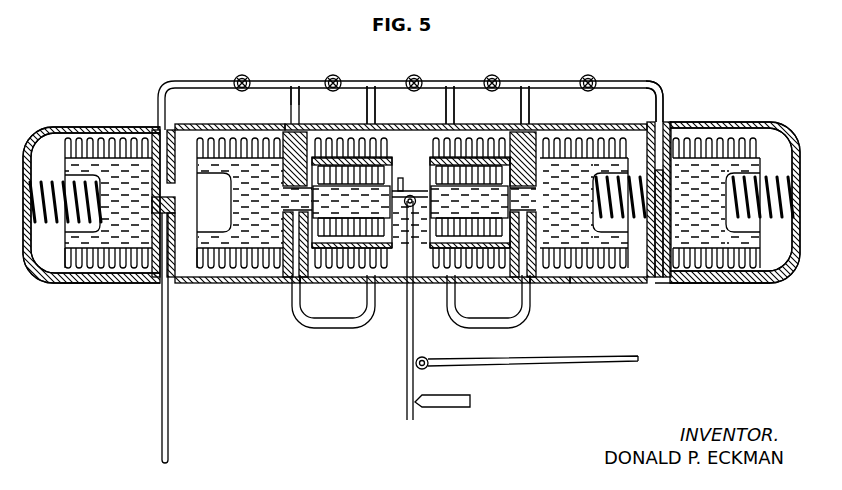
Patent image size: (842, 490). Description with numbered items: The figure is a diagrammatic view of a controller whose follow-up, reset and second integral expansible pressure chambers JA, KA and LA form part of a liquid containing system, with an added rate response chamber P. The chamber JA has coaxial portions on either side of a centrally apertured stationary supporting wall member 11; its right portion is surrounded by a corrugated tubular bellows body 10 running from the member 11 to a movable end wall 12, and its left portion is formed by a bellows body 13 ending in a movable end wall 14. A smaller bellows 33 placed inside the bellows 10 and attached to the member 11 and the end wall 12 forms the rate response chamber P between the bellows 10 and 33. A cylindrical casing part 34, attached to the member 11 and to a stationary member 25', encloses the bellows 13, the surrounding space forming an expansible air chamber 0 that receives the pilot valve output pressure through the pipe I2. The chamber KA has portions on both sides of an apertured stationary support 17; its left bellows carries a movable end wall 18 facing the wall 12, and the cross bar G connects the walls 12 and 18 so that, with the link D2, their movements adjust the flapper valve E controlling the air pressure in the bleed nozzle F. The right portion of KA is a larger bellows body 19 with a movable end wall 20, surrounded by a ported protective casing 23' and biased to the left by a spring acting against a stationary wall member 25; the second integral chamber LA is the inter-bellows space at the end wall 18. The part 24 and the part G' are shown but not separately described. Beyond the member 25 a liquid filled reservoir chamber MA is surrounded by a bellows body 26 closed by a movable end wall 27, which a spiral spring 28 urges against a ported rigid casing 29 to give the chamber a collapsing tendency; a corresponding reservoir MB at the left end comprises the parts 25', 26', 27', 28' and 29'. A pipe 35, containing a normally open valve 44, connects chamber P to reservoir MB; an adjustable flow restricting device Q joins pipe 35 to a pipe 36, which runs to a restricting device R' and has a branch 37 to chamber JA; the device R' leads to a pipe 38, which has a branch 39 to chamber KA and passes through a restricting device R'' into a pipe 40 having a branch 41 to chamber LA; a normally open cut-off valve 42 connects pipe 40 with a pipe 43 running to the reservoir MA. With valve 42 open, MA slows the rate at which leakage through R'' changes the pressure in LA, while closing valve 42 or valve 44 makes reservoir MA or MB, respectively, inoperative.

The normally open valve 44 is at (248, 79).
The adjustable flow restricting device Q is at (336, 78).
The flow restricting device R' is at (423, 74).
The flow restricting device R'' is at (505, 74).
The normally open cut-off valve 42 is at (591, 78).
The pipe 35 is at (291, 87).
The pipe 36 is at (368, 87).
The branch 37 is at (374, 108).
The pipe 38 is at (447, 87).
The branch 39 is at (447, 101).
The pipe 40 is at (531, 87).
The branch 41 is at (530, 108).
The pipe 43 is at (633, 87).
The cylindrical casing part 34 is at (183, 128).
The air chamber 0 is at (183, 267).
The stationary support 17 is at (536, 282).
The expansible reservoir MB is at (110, 140).
The bellows body 26' is at (108, 131).
The spiral spring 28' is at (65, 189).
The movable end wall 27' is at (103, 203).
The rigid casing element 29' is at (66, 300).
The stationary wall member 25' is at (146, 223).
The pipe I2 is at (168, 392).
The corrugated tubular bellows body 13 is at (230, 148).
The movable end wall 14 is at (232, 201).
The stationary supporting wall member 11 is at (282, 282).
The bellows 33 is at (330, 138).
The pressure chamber P is at (346, 148).
The follow-up expansible pressure chamber JA is at (386, 178).
The movable end wall 12 is at (393, 215).
The reset expansible pressure chamber KA is at (488, 137).
The movable end wall 18 is at (427, 215).
The cross-bar G is at (410, 189).
The post G' is at (414, 168).
The corrugated tubular bellows body 10 is at (352, 267).
The second integral response expansible chamber LA is at (503, 267).
The corrugated tubular bellows body 19 is at (588, 138).
The movable end wall 20 is at (593, 196).
The protective casing 23' is at (584, 277).
The partition block 24 is at (626, 272).
The stationary wall member 25 is at (677, 285).
The reservoir chamber MA is at (733, 138).
The tubular bellows body 26 is at (716, 125).
The spiral spring 28 is at (763, 181).
The movable end wall 27 is at (722, 202).
The rigid casing element 29 is at (763, 287).
The flapper valve E is at (410, 361).
The link D2 is at (525, 363).
The bleed nozzle F is at (462, 400).